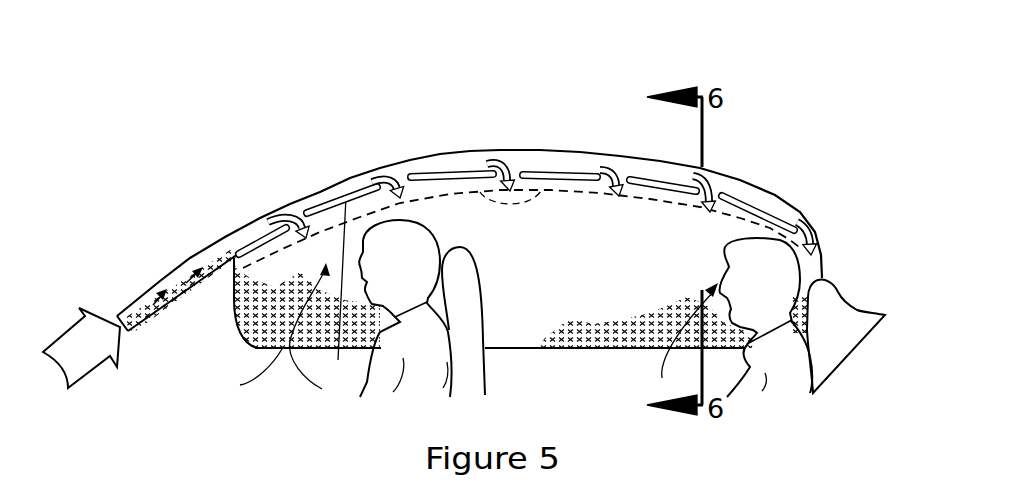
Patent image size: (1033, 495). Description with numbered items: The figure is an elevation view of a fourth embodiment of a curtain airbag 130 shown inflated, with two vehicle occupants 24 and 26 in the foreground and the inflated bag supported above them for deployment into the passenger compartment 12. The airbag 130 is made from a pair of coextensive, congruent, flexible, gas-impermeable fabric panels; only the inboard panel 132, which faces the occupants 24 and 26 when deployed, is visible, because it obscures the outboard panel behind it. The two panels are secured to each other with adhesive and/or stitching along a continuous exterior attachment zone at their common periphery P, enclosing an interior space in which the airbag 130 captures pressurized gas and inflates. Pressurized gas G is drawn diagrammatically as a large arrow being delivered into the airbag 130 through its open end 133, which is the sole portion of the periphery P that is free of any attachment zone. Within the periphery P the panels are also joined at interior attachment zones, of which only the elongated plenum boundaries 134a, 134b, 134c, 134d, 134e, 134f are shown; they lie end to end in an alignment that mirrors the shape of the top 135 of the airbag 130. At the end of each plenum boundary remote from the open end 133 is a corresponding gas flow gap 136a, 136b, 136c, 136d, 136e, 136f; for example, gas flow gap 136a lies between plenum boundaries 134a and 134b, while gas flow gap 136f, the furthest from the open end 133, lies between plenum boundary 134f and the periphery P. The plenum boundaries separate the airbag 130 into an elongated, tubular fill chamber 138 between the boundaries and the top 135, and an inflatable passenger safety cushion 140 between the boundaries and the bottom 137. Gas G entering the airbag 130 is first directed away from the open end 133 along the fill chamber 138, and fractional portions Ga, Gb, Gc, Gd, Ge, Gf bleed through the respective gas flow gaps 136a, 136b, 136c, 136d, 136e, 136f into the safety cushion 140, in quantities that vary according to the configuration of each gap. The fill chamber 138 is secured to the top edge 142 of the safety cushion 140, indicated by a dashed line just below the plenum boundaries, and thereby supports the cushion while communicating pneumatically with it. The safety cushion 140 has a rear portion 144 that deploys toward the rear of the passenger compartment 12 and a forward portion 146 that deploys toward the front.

The passenger compartment 12 is at (303, 396).
The occupant 24 is at (411, 278).
The occupant 26 is at (771, 295).
The curtain airbag 130 is at (684, 17).
The inboard panel 132 is at (260, 280).
The open end 133 is at (117, 321).
The plenum boundary 134a is at (263, 237).
The plenum boundary 134b is at (322, 205).
The plenum boundary 134c is at (415, 172).
The plenum boundary 134d is at (531, 172).
The plenum boundary 134e is at (645, 180).
The plenum boundary 134f is at (733, 200).
The top 135 is at (449, 154).
The gas flow gap 136a is at (292, 204).
The gas flow gap 136b is at (400, 167).
The gas flow gap 136c is at (514, 157).
The gas flow gap 136d is at (624, 162).
The gas flow gap 136e is at (725, 181).
The gas flow gap 136f is at (826, 227).
The bottom 137 is at (510, 348).
The fill chamber 138 is at (548, 224).
The passenger safety cushion 140 is at (573, 190).
The top edge 142 is at (540, 182).
The rear portion 144 is at (690, 337).
The forward portion 146 is at (240, 385).
The pressurized gas G is at (91, 363).
The fractional portion of pressurized gas Ga is at (270, 221).
The fractional portion of pressurized gas Gb is at (375, 182).
The fractional portion of pressurized gas Gc is at (489, 163).
The fractional portion of pressurized gas Gd is at (602, 170).
The fractional portion of pressurized gas Ge is at (696, 176).
The fractional portion of pressurized gas Gf is at (806, 226).
The common periphery P is at (866, 251).